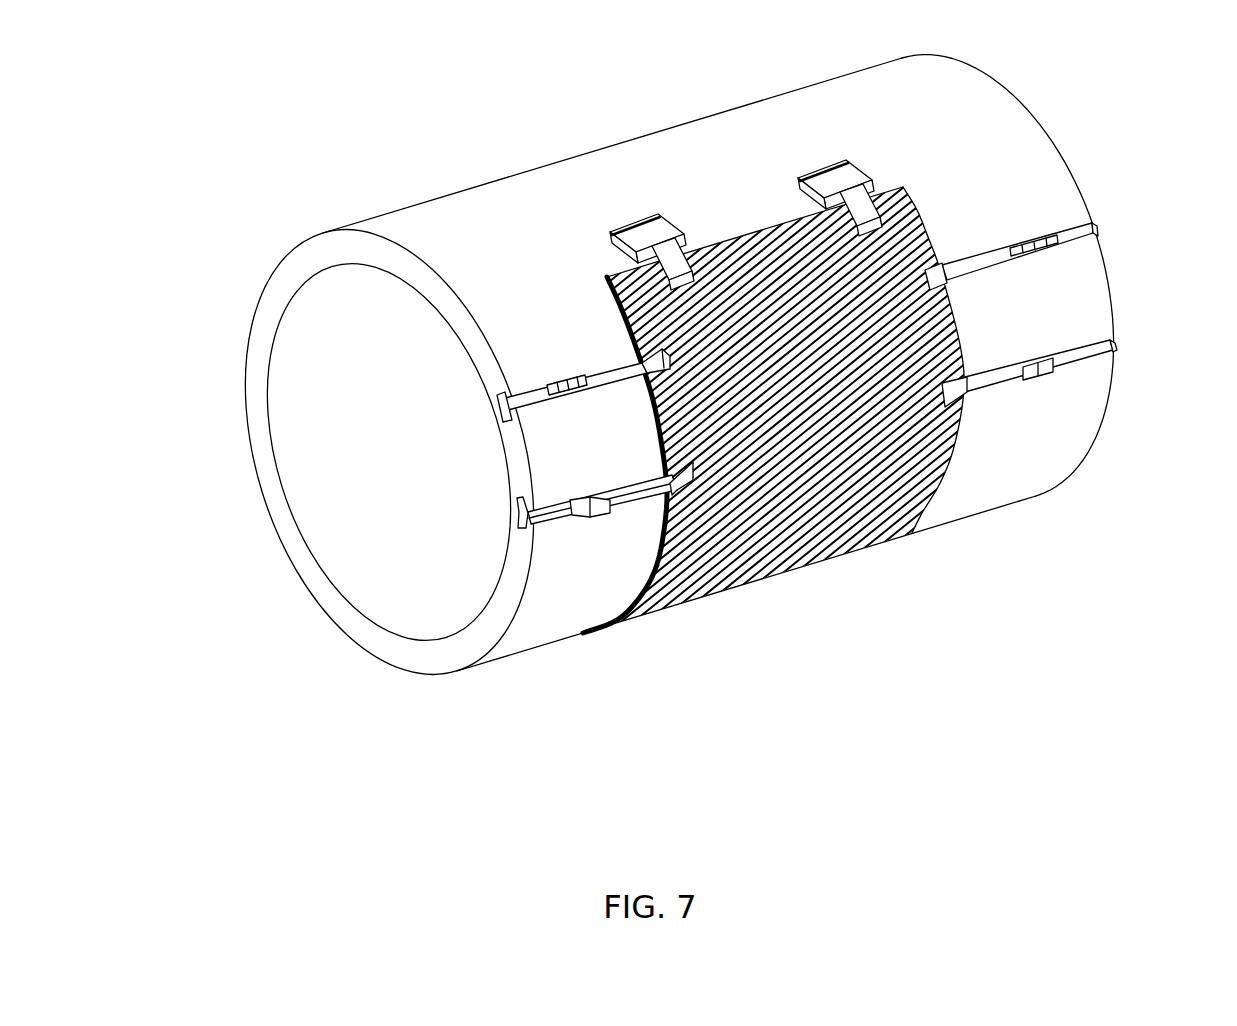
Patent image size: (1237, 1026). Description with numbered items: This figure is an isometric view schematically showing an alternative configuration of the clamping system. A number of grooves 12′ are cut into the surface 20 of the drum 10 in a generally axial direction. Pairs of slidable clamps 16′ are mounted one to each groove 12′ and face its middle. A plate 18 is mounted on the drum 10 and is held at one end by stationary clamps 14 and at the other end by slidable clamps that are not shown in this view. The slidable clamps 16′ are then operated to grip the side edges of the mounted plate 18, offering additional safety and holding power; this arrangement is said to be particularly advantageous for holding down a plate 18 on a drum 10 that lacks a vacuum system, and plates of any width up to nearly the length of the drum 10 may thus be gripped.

The drum 10 is at (257, 300).
The surface 20 is at (487, 222).
The stationary clamps 14 is at (807, 183).
The grooves 12′ is at (544, 523).
The slidable clamps 16′ is at (630, 503).
The plate 18 is at (802, 530).